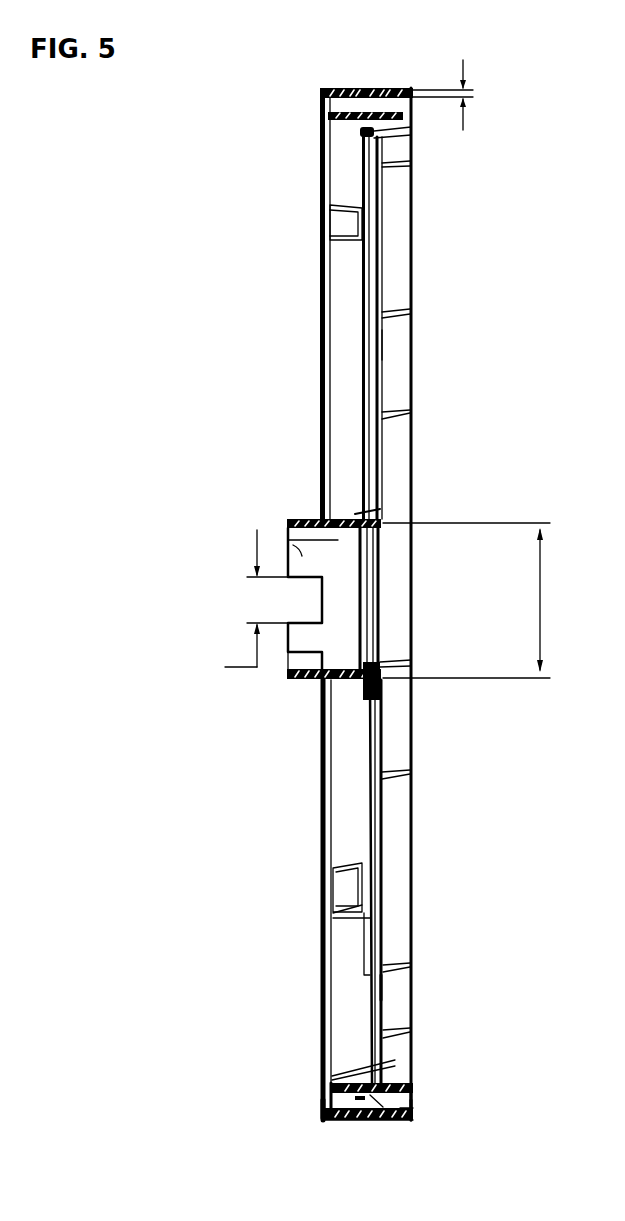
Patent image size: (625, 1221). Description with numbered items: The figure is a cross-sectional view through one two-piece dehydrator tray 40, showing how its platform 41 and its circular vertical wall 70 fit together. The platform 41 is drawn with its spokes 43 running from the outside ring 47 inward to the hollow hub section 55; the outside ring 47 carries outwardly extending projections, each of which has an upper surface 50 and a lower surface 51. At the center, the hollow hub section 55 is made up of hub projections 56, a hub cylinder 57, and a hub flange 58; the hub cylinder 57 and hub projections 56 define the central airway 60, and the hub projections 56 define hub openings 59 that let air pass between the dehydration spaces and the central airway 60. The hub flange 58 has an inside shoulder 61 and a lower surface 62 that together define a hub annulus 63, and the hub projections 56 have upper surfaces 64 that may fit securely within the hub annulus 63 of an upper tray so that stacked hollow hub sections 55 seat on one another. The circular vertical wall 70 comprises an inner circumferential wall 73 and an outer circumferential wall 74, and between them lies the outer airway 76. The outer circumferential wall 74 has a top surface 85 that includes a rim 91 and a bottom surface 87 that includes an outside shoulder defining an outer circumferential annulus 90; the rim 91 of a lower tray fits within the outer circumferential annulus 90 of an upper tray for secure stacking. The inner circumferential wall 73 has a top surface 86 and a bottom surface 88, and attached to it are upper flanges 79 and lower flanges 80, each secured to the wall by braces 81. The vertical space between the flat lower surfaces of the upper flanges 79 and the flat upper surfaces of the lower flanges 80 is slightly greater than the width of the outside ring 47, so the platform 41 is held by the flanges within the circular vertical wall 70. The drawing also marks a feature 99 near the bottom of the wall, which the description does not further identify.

The two-piece dehydrator tray 40 is at (262, 160).
The platform 41 is at (394, 488).
The spokes 43 is at (380, 197).
The outside ring 47 is at (413, 118).
The upper surface 50 is at (360, 132).
The lower surface 51 is at (376, 140).
The hollow hub section 55 is at (378, 553).
The hub projections 56 is at (288, 548).
The hub cylinder 57 is at (292, 546).
The hub flange 58 is at (385, 511).
The hub openings 59 is at (236, 653).
The central airway 60 is at (360, 609).
The inside shoulder 61 is at (385, 665).
The lower surface 62 is at (380, 660).
The hub annulus 63 is at (470, 600).
The upper surfaces 64 is at (290, 642).
The circular vertical wall 70 is at (435, 1112).
The inner circumferential wall 73 is at (400, 1085).
The outer circumferential wall 74 is at (364, 1121).
The outer airway 76 is at (386, 1121).
The upper flanges 79 is at (333, 222).
The lower flanges 80 is at (383, 346).
The braces 81 is at (384, 415).
The top surface 85 is at (322, 1115).
The top surface 86 is at (328, 1092).
The bottom surface 87 is at (415, 1121).
The bottom surface 88 is at (414, 1099).
The outer circumferential annulus 90 is at (448, 79).
The rim 91 is at (322, 1121).
The surface 99 is at (408, 1121).